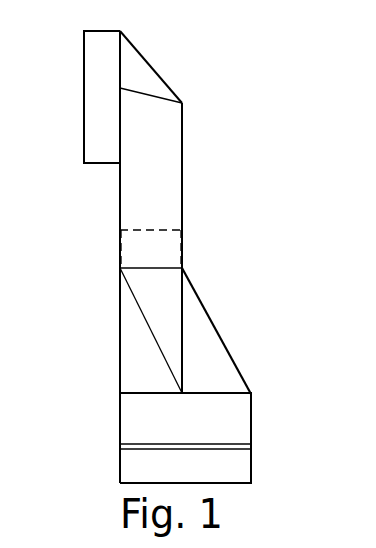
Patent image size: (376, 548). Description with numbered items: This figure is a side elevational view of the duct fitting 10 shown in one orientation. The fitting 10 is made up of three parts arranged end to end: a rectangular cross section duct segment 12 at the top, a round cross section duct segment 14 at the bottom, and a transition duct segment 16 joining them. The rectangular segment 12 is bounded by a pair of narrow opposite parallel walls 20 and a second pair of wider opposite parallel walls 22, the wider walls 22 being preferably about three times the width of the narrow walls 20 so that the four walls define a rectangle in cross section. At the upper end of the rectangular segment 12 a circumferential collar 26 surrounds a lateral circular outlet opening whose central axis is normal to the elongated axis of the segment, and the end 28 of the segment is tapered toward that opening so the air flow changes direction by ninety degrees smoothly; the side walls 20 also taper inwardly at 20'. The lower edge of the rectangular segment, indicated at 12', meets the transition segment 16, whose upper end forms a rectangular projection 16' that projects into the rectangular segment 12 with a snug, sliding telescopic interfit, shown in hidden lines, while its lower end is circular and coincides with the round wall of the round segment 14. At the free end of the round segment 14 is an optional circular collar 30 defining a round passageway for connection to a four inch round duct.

The fitting 10 is at (182, 256).
The rectangular cross section duct segment 12 is at (206, 144).
The opposite side edge 12' is at (86, 268).
The round cross section duct segment 14 is at (258, 404).
The transition duct segment 16 is at (189, 331).
The rectangular projection 16' is at (183, 249).
The opposite parallel walls 20 is at (151, 257).
The inward taper of side walls 20' is at (163, 77).
The second pair of opposite parallel walls 22 is at (182, 190).
The circumferential collar 26 is at (84, 90).
The tapered end of duct segment 28 is at (137, 47).
The circular collar 30 is at (250, 472).